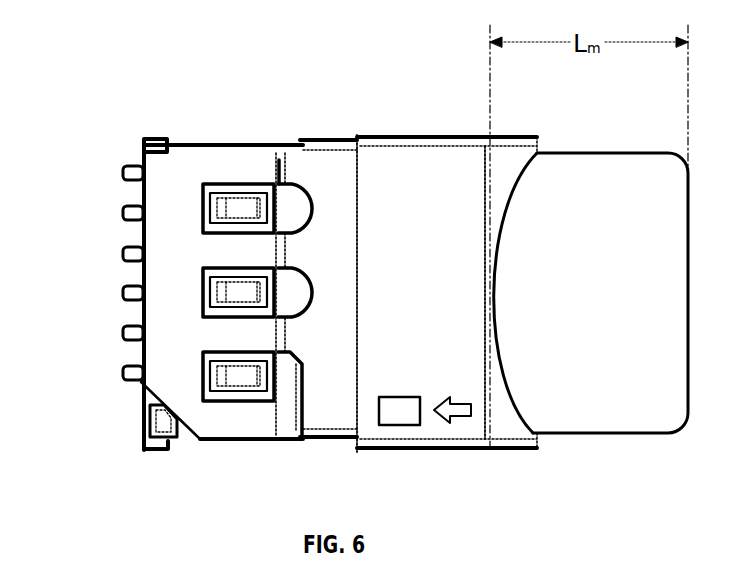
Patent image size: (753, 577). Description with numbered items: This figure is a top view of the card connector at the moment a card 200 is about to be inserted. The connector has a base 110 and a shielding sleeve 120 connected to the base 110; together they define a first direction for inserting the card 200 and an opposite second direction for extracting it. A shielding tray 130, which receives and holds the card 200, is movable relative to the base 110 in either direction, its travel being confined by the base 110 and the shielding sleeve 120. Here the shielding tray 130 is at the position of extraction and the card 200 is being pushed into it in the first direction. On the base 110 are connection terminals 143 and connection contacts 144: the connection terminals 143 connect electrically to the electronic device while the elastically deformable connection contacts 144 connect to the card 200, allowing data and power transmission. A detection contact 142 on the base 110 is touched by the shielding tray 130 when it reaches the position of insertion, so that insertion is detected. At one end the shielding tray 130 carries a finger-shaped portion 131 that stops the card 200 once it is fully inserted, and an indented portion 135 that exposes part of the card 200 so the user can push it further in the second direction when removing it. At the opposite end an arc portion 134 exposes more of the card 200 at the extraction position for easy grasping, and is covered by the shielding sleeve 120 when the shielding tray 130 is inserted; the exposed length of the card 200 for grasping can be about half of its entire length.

The base 110 is at (173, 373).
The shielding sleeve 120 is at (440, 150).
The shielding tray 130 is at (333, 152).
The finger-shaped portion 131 is at (258, 143).
The arc portion 134 is at (497, 347).
The indented portion 135 is at (307, 403).
The detection contact 142 is at (177, 443).
The connection terminals 143 is at (135, 173).
The connection contacts 144 is at (237, 373).
The card 200 is at (620, 170).